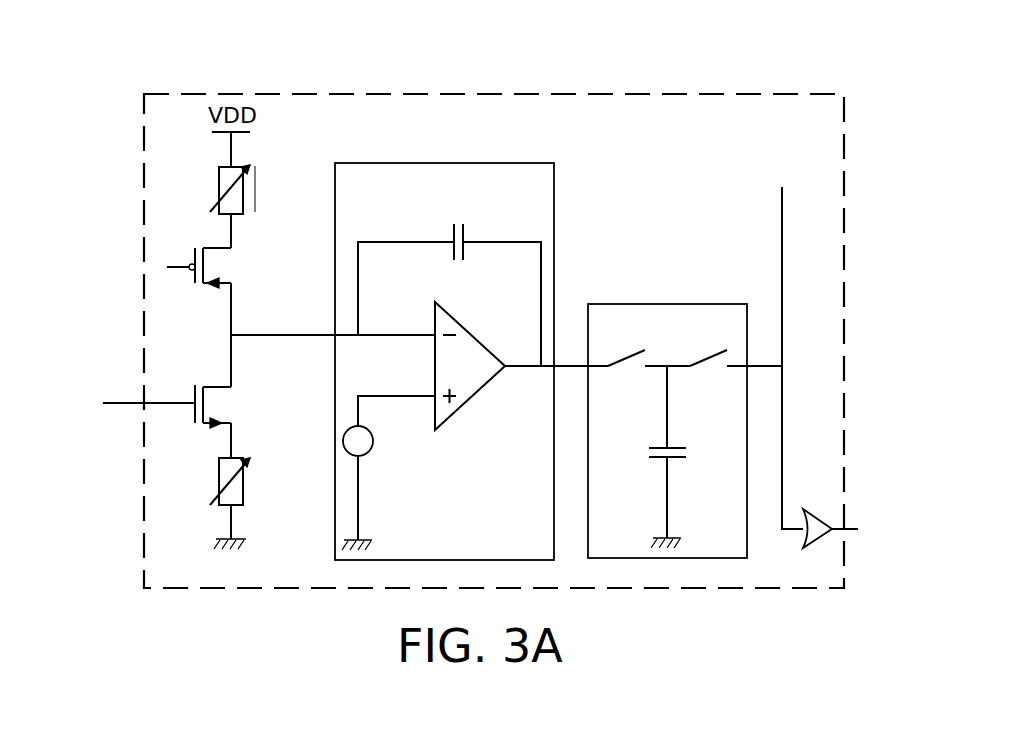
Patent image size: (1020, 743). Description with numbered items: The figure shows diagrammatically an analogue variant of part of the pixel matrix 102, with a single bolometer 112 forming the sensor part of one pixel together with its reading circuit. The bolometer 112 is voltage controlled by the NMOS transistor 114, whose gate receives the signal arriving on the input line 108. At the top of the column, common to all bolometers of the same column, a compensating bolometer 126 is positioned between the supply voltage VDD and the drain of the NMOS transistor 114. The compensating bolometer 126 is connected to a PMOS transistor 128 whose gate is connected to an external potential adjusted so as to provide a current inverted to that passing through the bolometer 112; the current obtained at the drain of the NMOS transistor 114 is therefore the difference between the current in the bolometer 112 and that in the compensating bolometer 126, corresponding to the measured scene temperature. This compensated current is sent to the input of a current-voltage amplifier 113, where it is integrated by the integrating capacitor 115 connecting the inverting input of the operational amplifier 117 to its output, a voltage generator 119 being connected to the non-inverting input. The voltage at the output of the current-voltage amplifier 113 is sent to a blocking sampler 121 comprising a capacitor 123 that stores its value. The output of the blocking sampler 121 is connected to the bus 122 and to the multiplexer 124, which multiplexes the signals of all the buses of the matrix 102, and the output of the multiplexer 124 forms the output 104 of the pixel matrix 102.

The pixel matrix 102 is at (690, 105).
The output 104 is at (850, 531).
The input 108 is at (140, 400).
The bolometer 112 is at (240, 492).
The current-voltage amplifier 113 is at (525, 160).
The NMOS transistor 114 is at (215, 385).
The integrating capacitor 115 is at (465, 228).
The operational amplifier 117 is at (470, 350).
The voltage generator 119 is at (365, 445).
The blocking sampler 121 is at (650, 304).
The bus 122 is at (783, 405).
The capacitor 123 is at (675, 447).
The multiplexer 124 is at (812, 525).
The compensating bolometer 126 is at (240, 200).
The PMOS transistor 128 is at (215, 248).